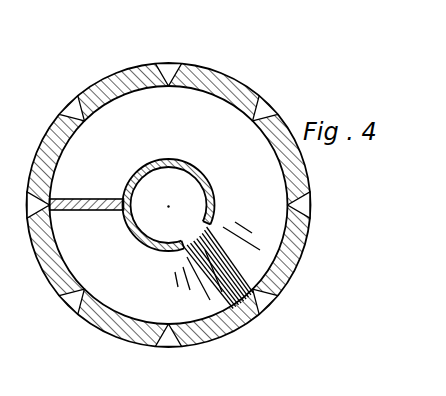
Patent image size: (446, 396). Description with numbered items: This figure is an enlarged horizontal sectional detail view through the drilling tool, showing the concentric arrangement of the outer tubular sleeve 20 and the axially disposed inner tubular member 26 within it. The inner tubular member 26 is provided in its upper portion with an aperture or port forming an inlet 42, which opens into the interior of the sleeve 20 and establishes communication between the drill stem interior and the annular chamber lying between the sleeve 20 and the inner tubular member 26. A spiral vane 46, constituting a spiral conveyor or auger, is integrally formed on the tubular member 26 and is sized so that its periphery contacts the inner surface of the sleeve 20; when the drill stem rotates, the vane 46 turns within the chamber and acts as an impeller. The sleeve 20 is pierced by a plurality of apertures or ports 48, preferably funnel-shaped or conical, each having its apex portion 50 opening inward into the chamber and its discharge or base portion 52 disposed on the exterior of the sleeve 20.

The sleeve 20 is at (217, 82).
The inner tubular member 26 is at (183, 168).
The inlet 42 is at (212, 193).
The spiral vane 46 is at (102, 198).
The apertures or ports 48 is at (262, 108).
The apex portions 50 is at (84, 118).
The discharge or base portion 52 is at (74, 112).